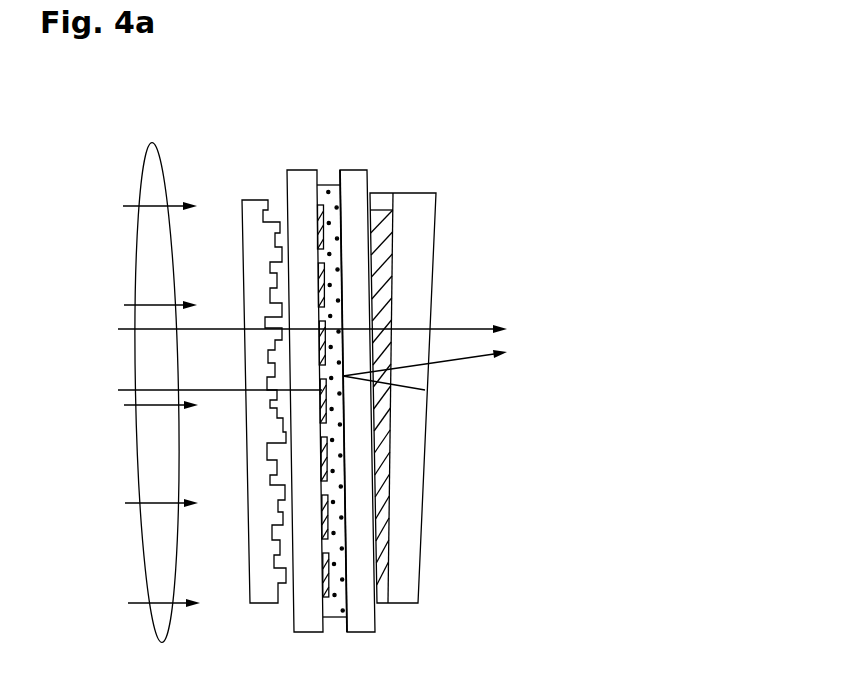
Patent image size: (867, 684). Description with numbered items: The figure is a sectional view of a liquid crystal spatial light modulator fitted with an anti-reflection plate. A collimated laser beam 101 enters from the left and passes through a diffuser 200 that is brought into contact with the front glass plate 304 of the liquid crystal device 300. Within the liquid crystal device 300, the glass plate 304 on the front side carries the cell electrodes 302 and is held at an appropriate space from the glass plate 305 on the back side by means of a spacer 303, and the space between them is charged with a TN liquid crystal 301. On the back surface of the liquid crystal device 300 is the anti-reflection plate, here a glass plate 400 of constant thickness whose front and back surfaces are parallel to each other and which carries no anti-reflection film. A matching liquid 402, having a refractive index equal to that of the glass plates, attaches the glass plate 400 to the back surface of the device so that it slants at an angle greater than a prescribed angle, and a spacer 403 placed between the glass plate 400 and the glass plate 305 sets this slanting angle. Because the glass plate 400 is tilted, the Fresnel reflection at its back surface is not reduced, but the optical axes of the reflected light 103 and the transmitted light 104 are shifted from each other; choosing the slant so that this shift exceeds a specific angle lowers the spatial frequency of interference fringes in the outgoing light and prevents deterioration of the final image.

The collimated laser beam 101 is at (152, 142).
The diffuser 200 is at (247, 200).
The liquid crystal device 300 is at (308, 366).
The TN liquid crystal 301 is at (331, 198).
The pixel electrodes 302 is at (318, 222).
The spacer 303 is at (327, 183).
The glass plate 304 is at (298, 228).
The glass plate 305 is at (360, 177).
The glass plate 400 is at (434, 326).
The matching liquid 402 is at (394, 212).
The spacer 403 is at (388, 197).
The transmitted light 104 is at (337, 325).
The reflected light 103 is at (337, 364).